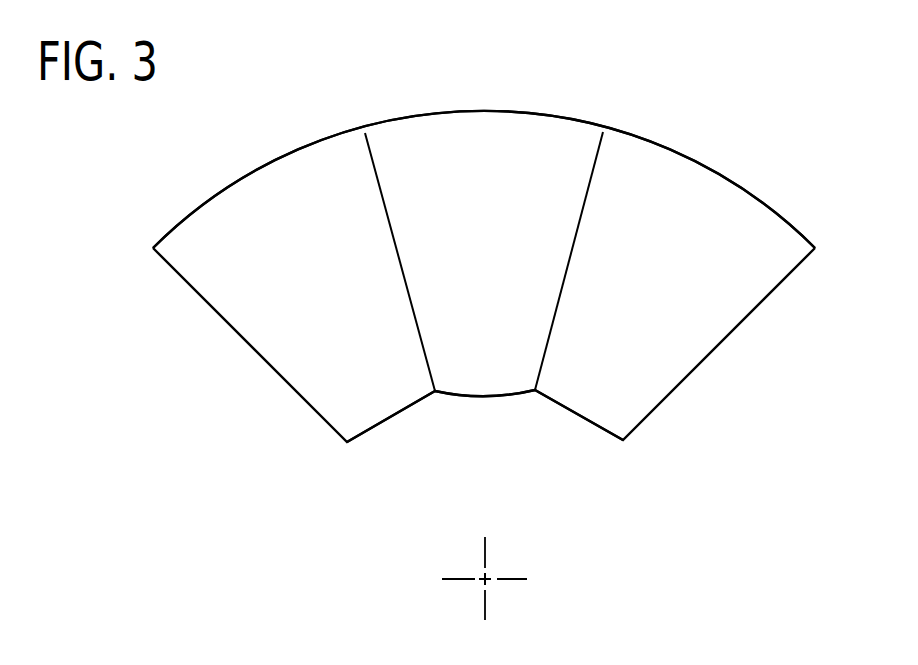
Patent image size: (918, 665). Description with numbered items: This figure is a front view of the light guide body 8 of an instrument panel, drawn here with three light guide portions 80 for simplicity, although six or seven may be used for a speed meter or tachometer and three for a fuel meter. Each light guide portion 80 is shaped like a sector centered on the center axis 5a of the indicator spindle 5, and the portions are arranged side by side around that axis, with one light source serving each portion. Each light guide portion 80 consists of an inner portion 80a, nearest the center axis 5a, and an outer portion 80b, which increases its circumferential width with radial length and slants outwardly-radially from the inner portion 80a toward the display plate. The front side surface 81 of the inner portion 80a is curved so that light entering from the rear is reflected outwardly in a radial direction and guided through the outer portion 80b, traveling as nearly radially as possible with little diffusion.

The light guide body 8 is at (400, 82).
The light guide portion 80 is at (482, 109).
The inner portion 80a is at (370, 395).
The outer portion 80b is at (510, 177).
The front side surface 81 is at (330, 298).
The indicator spindle 5 is at (503, 563).
The center axis 5a is at (487, 582).